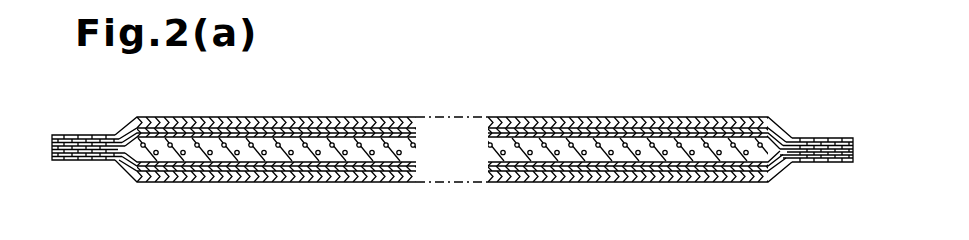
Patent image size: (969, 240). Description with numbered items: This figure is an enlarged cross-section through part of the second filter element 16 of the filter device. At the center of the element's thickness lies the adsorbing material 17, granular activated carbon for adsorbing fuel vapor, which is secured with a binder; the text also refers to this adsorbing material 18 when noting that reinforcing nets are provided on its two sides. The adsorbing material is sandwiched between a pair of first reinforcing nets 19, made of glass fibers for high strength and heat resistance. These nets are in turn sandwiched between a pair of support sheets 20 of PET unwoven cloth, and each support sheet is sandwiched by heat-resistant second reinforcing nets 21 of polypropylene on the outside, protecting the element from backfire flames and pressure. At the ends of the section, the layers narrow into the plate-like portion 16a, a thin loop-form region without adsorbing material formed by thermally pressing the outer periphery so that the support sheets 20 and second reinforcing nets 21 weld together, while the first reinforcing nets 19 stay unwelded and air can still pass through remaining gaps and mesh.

The plate-like portion 16a is at (76, 135).
The second filter element 16 is at (176, 117).
The adsorbing material 17 is at (289, 143).
The adsorbing material 18 is at (348, 142).
The first reinforcing nets 19 is at (531, 137).
The support sheets 20 is at (603, 132).
The second reinforcing nets 21 is at (686, 118).